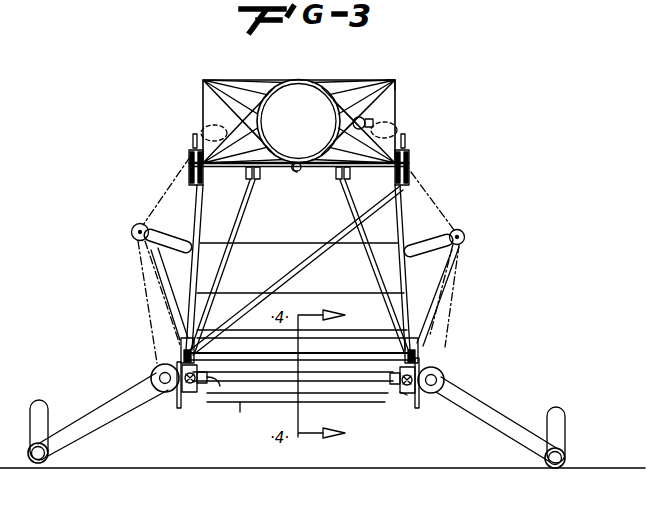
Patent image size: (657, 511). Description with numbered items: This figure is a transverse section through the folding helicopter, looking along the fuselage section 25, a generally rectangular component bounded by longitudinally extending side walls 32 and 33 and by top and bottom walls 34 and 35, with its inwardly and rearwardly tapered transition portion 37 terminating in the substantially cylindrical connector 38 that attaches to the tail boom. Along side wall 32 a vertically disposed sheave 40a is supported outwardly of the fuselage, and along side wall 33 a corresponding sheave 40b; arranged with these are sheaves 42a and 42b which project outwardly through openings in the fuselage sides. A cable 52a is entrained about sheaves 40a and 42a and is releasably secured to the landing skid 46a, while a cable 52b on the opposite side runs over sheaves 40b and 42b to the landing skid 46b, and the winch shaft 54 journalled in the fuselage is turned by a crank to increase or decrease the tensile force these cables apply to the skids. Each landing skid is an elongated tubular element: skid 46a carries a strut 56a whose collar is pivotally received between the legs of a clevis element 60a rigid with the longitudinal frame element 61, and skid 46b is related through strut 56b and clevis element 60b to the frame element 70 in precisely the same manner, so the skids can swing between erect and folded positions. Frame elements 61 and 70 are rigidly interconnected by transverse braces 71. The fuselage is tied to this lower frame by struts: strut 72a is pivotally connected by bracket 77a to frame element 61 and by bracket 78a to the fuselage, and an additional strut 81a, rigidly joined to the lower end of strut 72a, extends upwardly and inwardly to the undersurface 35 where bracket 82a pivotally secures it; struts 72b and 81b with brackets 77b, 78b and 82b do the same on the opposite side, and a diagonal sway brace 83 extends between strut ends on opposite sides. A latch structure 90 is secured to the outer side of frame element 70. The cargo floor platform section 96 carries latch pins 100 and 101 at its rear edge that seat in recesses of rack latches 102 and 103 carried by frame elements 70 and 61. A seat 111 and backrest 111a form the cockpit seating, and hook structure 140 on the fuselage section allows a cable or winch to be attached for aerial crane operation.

The fuselage section 25 is at (310, 136).
The side wall 32 is at (202, 99).
The side wall 33 is at (398, 115).
The top wall 34 is at (341, 84).
The bottom wall 35 is at (310, 170).
The transition portion 37 is at (258, 81).
The cylindrical connector 38 is at (311, 81).
The sheave 40a is at (190, 166).
The sheave 40b is at (412, 180).
The sheave 42a is at (204, 131).
The sheave 42b is at (400, 133).
The landing skid 46a is at (30, 410).
The landing skid 46b is at (566, 440).
The cable 52a is at (193, 140).
The cable 52b is at (405, 141).
The shaft 54 is at (391, 83).
The strut 56a is at (93, 417).
The strut 56b is at (507, 421).
The clevis element 60a is at (172, 393).
The clevis element 60b is at (433, 394).
The frame element 61 is at (190, 394).
The frame element 70 is at (408, 396).
The transverse brace 71 is at (320, 392).
The strut 72a is at (196, 287).
The strut 72b is at (398, 228).
The bracket 77a is at (181, 352).
The bracket 77b is at (419, 350).
The bracket 78a is at (204, 180).
The bracket 78b is at (410, 167).
The strut 81a is at (238, 236).
The strut 81b is at (377, 275).
The bracket 82a is at (259, 174).
The bracket 82b is at (341, 176).
The sway brace 83 is at (282, 272).
The latch structure 90 is at (179, 410).
The platform section 96 is at (277, 395).
The latch pin 100 is at (396, 386).
The latch pin 101 is at (213, 392).
The rack latch 102 is at (404, 396).
The rack latch 103 is at (202, 386).
The seat 111 is at (249, 343).
The backrest 111a is at (297, 249).
The hook structure 140 is at (297, 163).